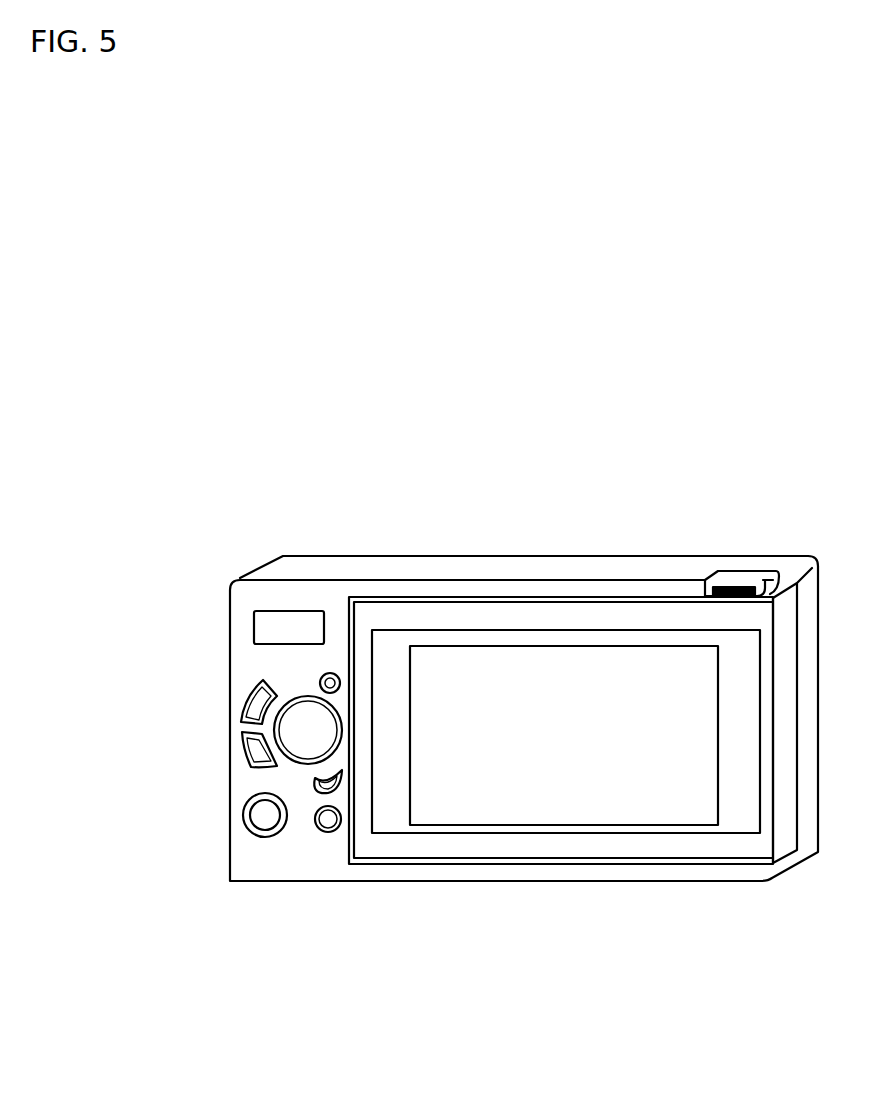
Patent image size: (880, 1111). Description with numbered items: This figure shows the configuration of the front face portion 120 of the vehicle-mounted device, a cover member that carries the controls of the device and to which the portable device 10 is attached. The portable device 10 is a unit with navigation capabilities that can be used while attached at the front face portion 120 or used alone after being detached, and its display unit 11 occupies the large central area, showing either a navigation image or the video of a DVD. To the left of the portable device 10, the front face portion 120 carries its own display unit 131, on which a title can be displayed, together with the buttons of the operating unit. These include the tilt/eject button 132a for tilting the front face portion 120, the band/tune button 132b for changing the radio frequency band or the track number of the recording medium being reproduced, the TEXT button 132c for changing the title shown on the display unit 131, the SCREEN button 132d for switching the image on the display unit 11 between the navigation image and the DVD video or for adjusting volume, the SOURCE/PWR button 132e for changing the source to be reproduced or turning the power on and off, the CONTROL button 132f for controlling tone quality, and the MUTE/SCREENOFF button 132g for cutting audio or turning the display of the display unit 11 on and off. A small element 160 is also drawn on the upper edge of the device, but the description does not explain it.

The portable device 10 is at (737, 850).
The display unit 11 is at (640, 805).
The front face portion 120 is at (282, 572).
The display unit 131 is at (268, 628).
The tilt/eject button 132a is at (326, 824).
The band/tune button 132b is at (262, 815).
The TEXT button 132c is at (338, 778).
The SCREEN button 132d is at (323, 725).
The SOURCE/PWR button 132e is at (250, 700).
The CONTROL button 132f is at (252, 748).
The MUTE/SCREENOFF button 132g is at (333, 683).
The switch button 160 is at (742, 580).